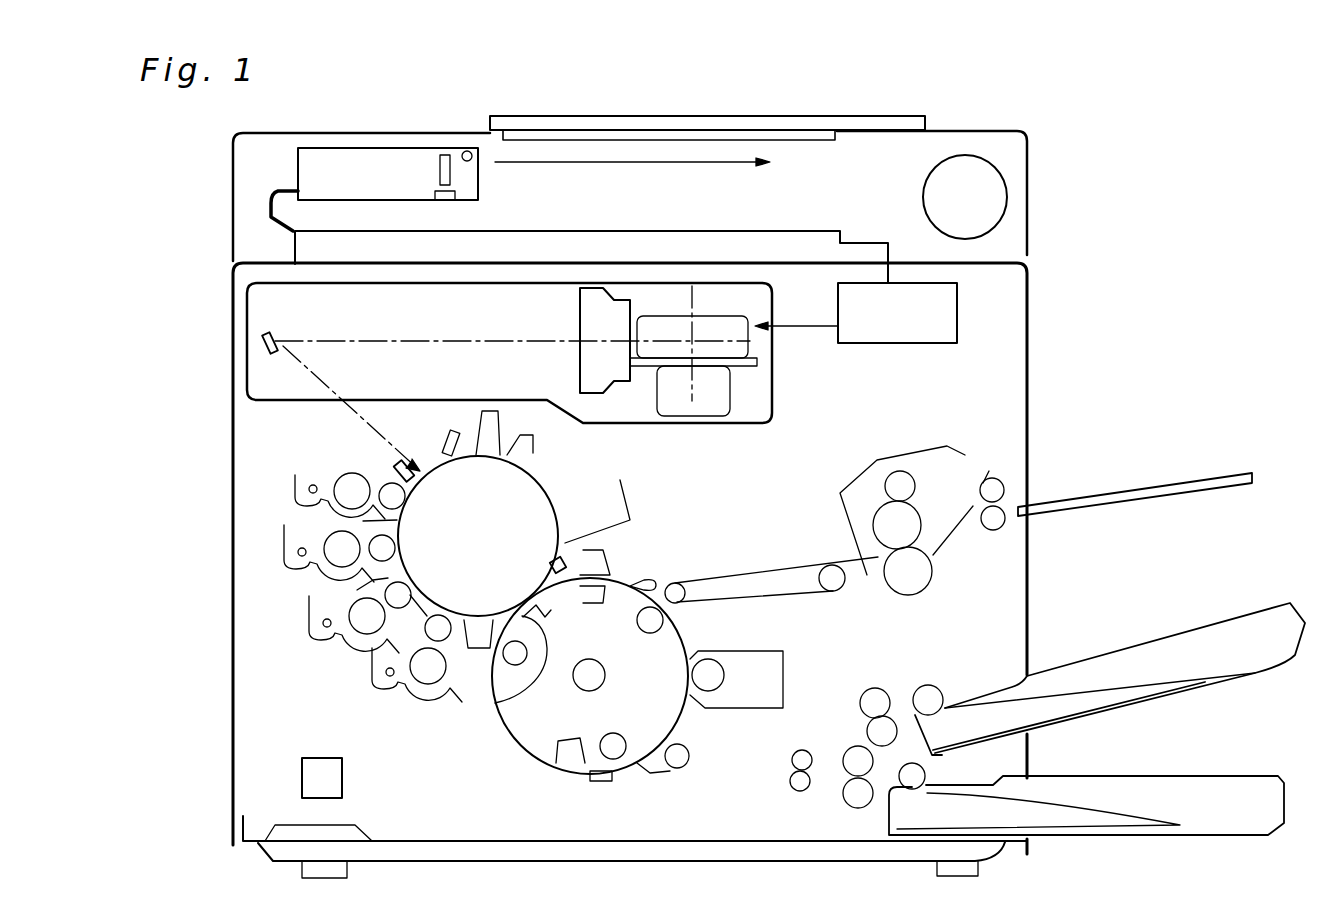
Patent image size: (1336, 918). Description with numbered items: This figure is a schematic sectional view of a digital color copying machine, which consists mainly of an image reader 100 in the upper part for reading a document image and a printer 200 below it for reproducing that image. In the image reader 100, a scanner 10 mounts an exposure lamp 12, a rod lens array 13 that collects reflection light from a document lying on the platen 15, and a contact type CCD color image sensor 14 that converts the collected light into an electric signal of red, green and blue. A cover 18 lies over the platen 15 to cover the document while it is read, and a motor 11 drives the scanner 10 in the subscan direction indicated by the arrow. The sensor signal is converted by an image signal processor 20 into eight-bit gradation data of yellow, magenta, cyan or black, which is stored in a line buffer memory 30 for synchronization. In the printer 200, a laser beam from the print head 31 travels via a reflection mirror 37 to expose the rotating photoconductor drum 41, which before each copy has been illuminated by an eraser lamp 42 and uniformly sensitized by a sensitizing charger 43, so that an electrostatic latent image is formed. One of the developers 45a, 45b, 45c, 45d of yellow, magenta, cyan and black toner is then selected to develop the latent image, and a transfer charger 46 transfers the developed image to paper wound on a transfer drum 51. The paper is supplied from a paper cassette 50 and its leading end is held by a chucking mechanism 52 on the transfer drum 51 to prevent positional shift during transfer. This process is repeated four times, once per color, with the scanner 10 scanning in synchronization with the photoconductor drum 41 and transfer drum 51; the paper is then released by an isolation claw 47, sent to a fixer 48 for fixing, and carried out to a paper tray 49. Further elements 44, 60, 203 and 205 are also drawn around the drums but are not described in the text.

The image reader 100 is at (232, 186).
The printer 200 is at (232, 386).
The scanner 10 is at (366, 140).
The motor 11 is at (1008, 193).
The exposure lamp 12 is at (468, 147).
The rod lens array 13 is at (440, 163).
The contact type CCD color image sensor 14 is at (442, 198).
The platen 15 is at (740, 125).
The cover 18 is at (842, 113).
The image signal processor 20 is at (300, 243).
The line buffer memory 30 is at (957, 312).
The print head 31 is at (753, 338).
The reflection mirror 37 is at (270, 334).
The photoconductor drum 41 is at (497, 549).
The eraser lamp 42 is at (540, 447).
The sensitizing charger 43 is at (490, 406).
The eraser lamp 44 is at (448, 428).
The developer 45a is at (295, 478).
The developer 45b is at (285, 556).
The developer 45c is at (308, 626).
The developer 45d is at (378, 690).
The transfer charger 46 is at (496, 699).
The isolation claw 47 is at (648, 577).
The fixer 48 is at (877, 457).
The paper tray 49 is at (1193, 478).
The paper cassette 50 is at (1218, 682).
The transfer drum 51 is at (542, 757).
The chucking mechanism 52 is at (600, 778).
The exposure device 60 is at (394, 462).
The transfer charger 203 is at (565, 540).
The power supply 205 is at (343, 768).